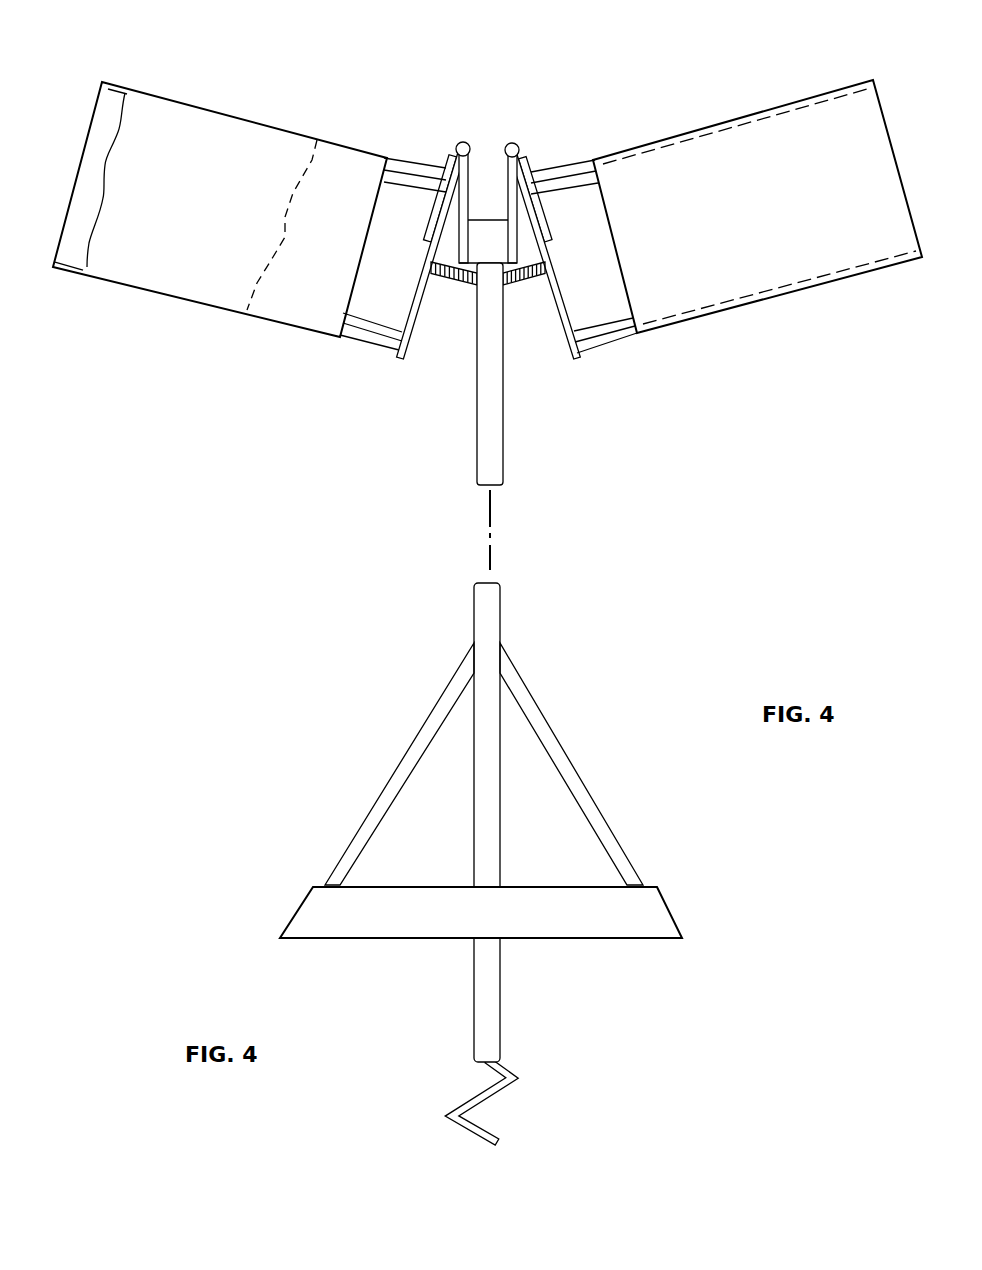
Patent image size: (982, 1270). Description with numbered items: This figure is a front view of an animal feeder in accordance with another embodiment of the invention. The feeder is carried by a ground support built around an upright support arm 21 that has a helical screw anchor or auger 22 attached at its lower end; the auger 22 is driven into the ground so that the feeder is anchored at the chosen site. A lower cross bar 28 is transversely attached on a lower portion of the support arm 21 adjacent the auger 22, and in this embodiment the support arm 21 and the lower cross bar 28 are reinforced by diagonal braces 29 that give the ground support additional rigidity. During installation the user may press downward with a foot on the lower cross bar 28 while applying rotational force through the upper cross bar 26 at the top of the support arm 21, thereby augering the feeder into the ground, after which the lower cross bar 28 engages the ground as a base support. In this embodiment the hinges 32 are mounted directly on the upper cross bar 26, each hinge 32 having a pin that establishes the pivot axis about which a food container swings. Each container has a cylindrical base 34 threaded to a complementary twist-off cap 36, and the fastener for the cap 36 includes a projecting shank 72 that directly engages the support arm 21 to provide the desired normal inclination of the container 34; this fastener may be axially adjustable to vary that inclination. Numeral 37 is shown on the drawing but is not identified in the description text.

The support arm 21 is at (400, 662).
The helical screw anchor or auger 22 is at (565, 1087).
The upper cross bar 26 is at (518, 155).
The lower cross bar 28 is at (558, 878).
The diagonal braces 29 is at (478, 764).
The hinge assembly 32 is at (502, 104).
The cylindrical base 34 is at (487, 238).
The twist-off cap 36 is at (637, 366).
The fold line 37 is at (249, 281).
The projecting shank 72 is at (491, 345).